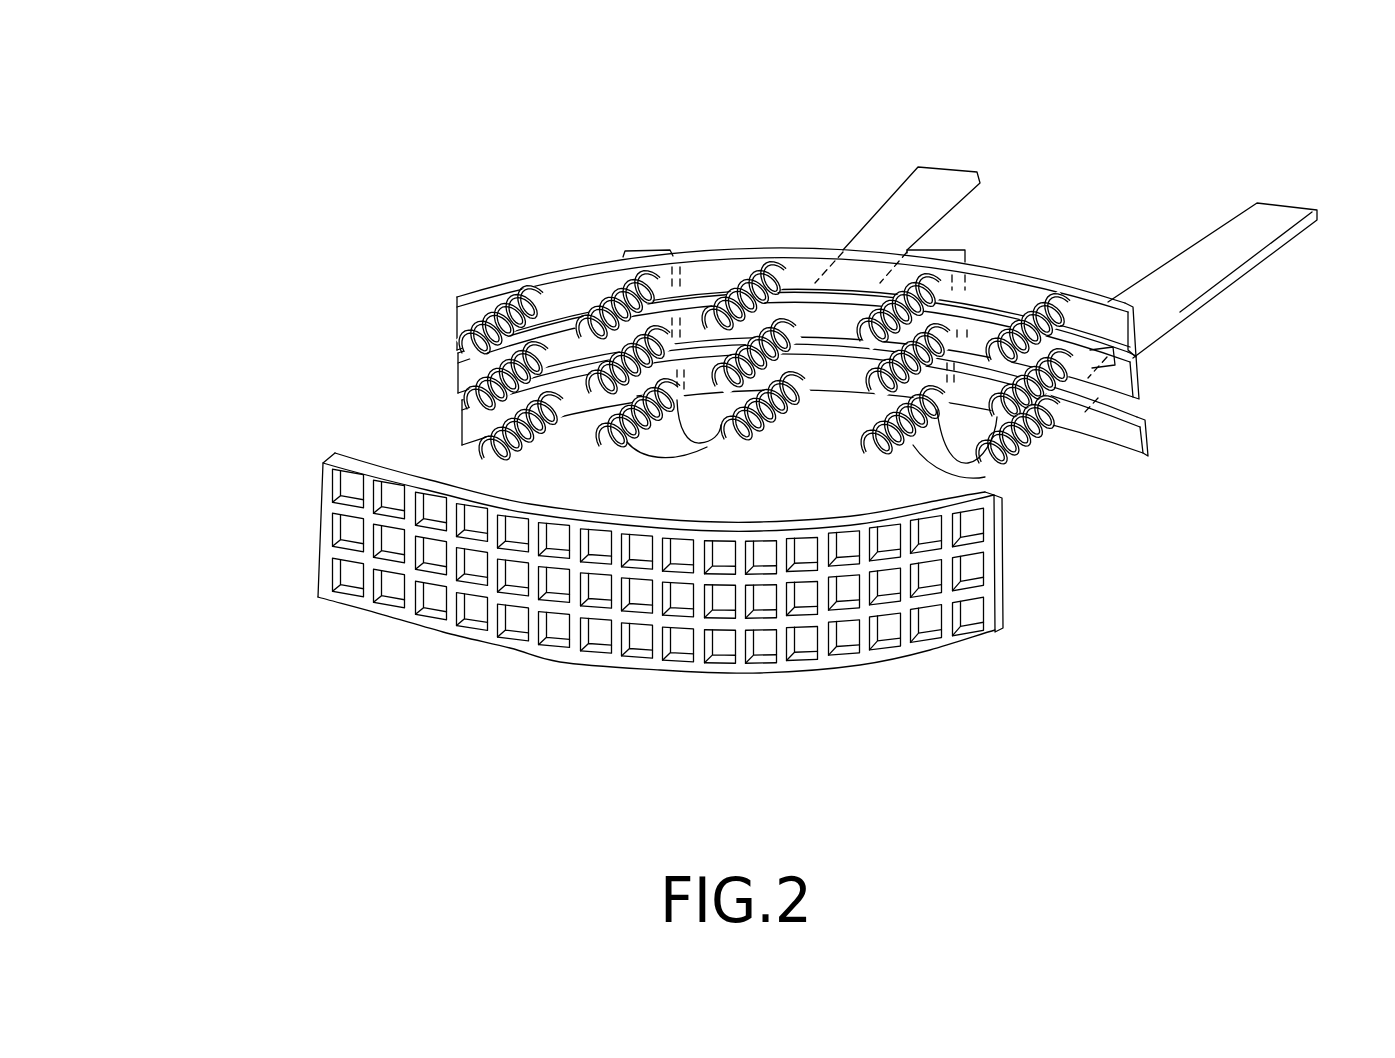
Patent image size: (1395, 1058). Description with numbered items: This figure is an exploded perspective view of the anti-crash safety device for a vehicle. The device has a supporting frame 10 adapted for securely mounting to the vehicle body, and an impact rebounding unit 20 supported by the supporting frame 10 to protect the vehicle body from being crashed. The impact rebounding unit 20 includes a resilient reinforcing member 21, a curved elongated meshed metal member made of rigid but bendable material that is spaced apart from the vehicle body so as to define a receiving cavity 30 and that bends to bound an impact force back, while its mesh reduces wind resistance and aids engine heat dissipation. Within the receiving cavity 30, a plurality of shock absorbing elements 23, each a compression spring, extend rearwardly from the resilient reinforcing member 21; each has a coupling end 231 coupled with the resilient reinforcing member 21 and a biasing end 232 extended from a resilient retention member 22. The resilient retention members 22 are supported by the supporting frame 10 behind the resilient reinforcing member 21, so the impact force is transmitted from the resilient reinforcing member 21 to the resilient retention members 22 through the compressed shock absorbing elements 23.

The supporting frame 10 is at (975, 477).
The impact rebounding unit 20 is at (218, 227).
The resilient reinforcing member 21 is at (336, 503).
The resilient retention member 22 is at (700, 277).
The shock absorbing element 23 is at (523, 277).
The coupling end 231 is at (453, 337).
The biasing end 232 is at (1103, 300).
The receiving cavity 30 is at (435, 398).